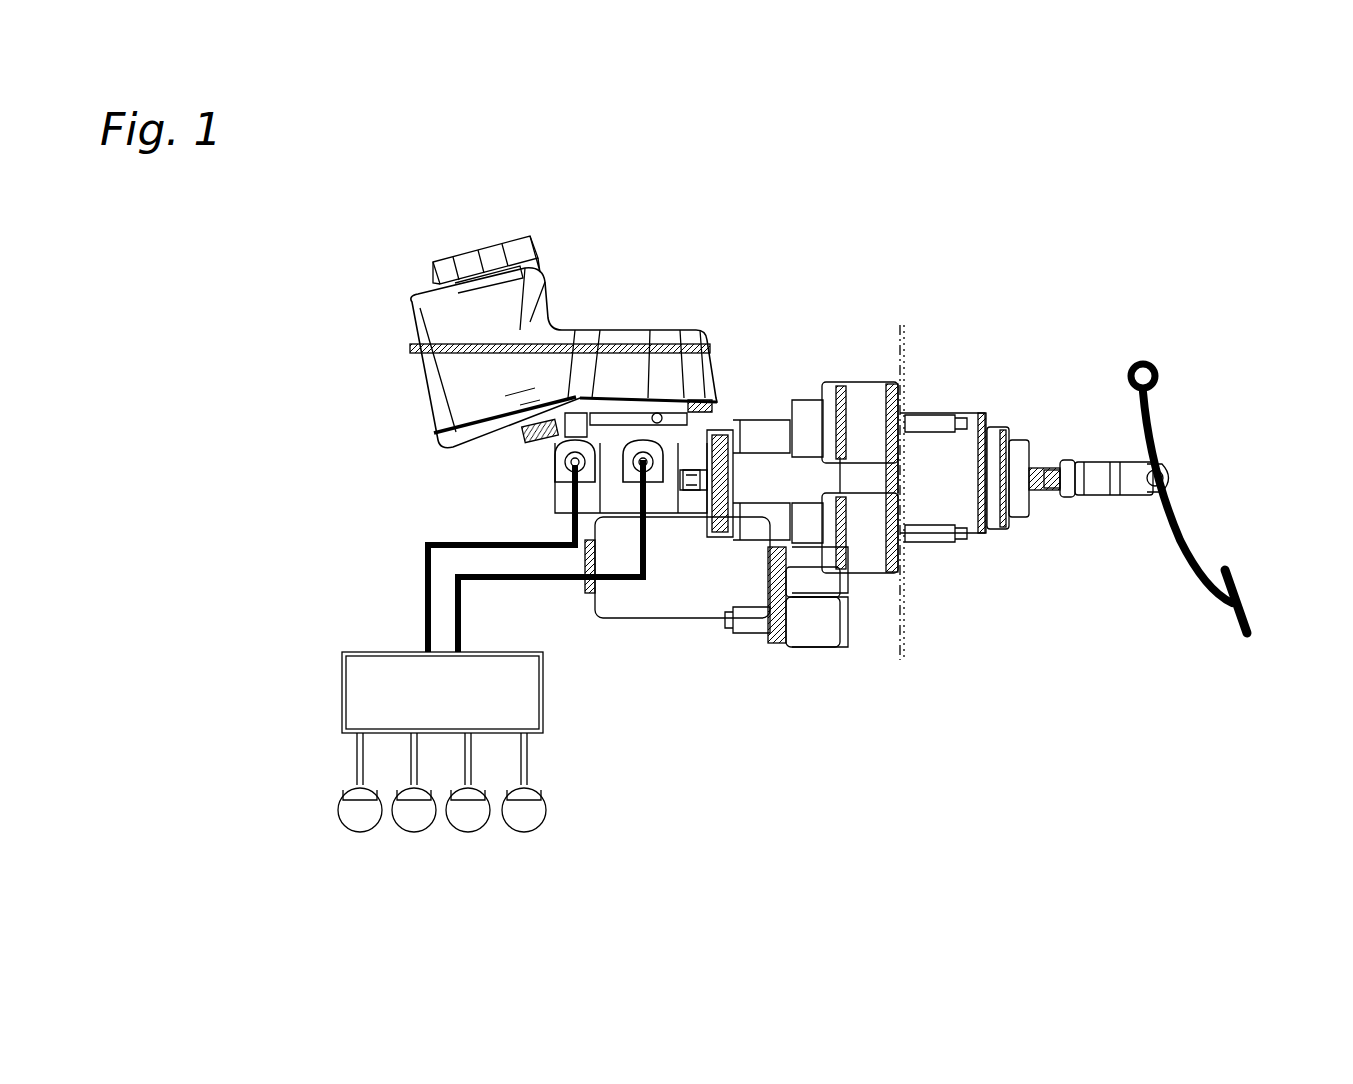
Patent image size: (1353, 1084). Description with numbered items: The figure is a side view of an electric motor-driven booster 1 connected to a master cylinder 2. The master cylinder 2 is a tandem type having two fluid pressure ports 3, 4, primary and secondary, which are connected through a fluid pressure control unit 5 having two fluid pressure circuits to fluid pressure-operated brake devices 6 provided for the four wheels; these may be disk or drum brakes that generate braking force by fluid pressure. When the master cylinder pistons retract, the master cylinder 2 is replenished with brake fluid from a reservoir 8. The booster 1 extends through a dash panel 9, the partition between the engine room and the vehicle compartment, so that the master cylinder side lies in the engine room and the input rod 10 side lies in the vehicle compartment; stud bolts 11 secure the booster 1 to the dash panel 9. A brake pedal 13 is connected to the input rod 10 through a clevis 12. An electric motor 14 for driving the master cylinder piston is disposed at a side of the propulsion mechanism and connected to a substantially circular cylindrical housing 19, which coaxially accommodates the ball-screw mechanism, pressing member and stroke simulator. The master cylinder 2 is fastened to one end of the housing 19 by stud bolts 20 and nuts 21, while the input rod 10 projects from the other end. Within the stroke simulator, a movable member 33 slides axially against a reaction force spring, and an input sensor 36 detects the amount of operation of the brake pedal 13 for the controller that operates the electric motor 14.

The electric motor-driven booster 1 is at (1003, 286).
The master cylinder 2 is at (560, 498).
The fluid pressure port 3 is at (573, 405).
The fluid pressure port 4 is at (635, 410).
The fluid pressure control unit 5 is at (355, 688).
The fluid pressure-operated brake device 6 is at (510, 870).
The reservoir 8 is at (543, 305).
The dash panel 9 is at (905, 640).
The input rod 10 is at (1050, 466).
The stud bolt 11 is at (947, 412).
The clevis 12 is at (1132, 486).
The brake pedal 13 is at (1183, 545).
The electric motor 14 is at (695, 598).
The housing 19 is at (830, 390).
The stud bolt 20 is at (700, 400).
The nut 21 is at (695, 470).
The movable member 33 is at (1022, 428).
The input sensor 36 is at (1143, 362).